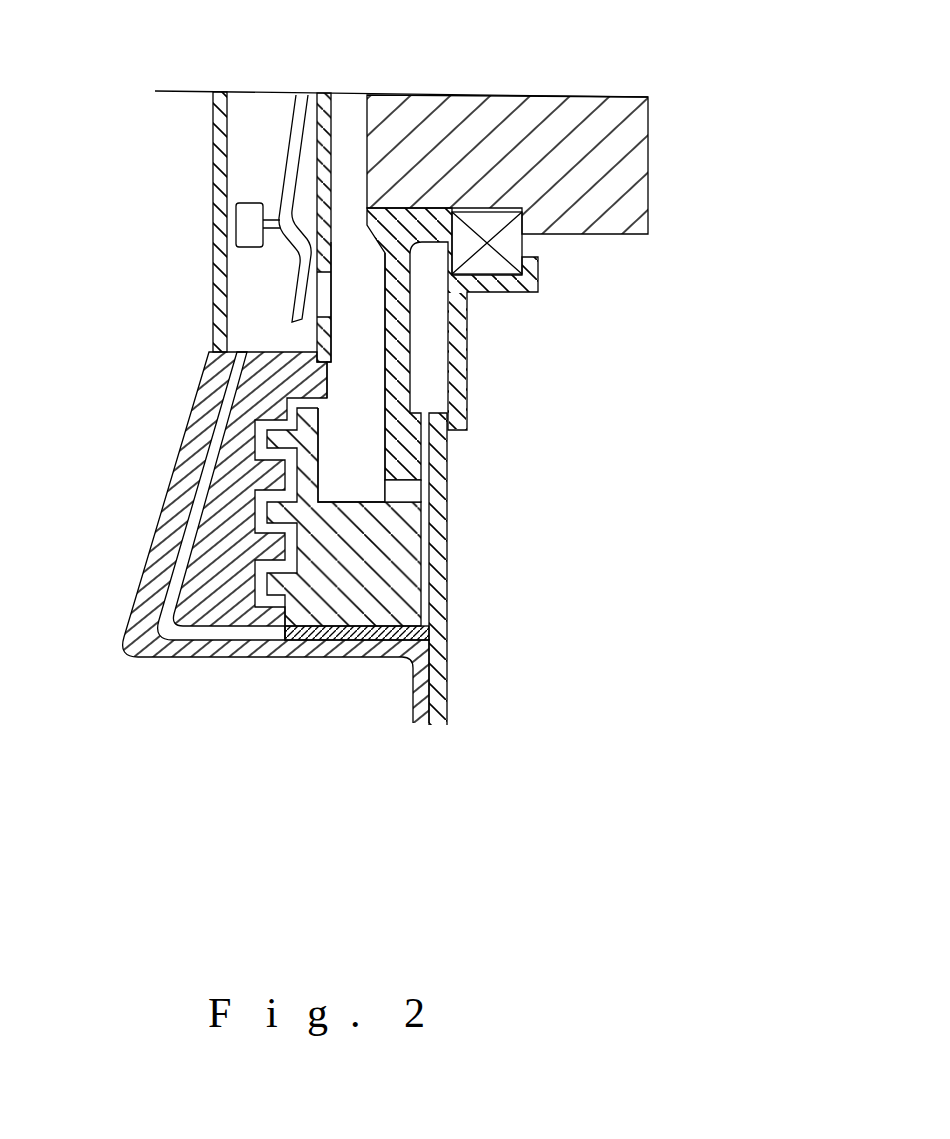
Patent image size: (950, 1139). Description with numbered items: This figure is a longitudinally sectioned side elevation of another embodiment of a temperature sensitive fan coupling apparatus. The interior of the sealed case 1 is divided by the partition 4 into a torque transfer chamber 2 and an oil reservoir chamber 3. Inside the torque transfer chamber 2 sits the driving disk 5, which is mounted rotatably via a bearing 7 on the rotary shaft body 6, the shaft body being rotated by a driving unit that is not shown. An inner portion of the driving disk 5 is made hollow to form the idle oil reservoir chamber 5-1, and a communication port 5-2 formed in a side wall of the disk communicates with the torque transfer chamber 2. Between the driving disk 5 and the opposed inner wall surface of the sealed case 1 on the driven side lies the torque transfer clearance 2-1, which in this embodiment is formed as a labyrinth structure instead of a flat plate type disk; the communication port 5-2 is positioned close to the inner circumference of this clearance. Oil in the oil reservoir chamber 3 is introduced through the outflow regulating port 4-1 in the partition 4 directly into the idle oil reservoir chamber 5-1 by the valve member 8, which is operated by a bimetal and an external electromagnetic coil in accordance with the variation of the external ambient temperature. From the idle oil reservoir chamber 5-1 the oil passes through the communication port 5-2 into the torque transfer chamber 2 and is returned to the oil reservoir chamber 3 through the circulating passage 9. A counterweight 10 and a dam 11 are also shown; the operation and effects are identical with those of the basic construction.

The sealed case 1 is at (167, 525).
The torque transfer chamber 2 is at (429, 603).
The torque transfer clearance 2-1 is at (280, 608).
The oil reservoir chamber 3 is at (250, 150).
The partition 4 is at (324, 94).
The outflow regulating port 4-1 is at (313, 297).
The driving disk 5 is at (373, 600).
The idle oil reservoir chamber 5-1 is at (355, 440).
The communication port 5-2 is at (400, 492).
The rotary shaft body 6 is at (492, 116).
The bearing 7 is at (507, 240).
The valve member 8 is at (287, 122).
The circulating passage 9 is at (223, 420).
The counterweight 10 is at (243, 225).
The dam 11 is at (320, 645).